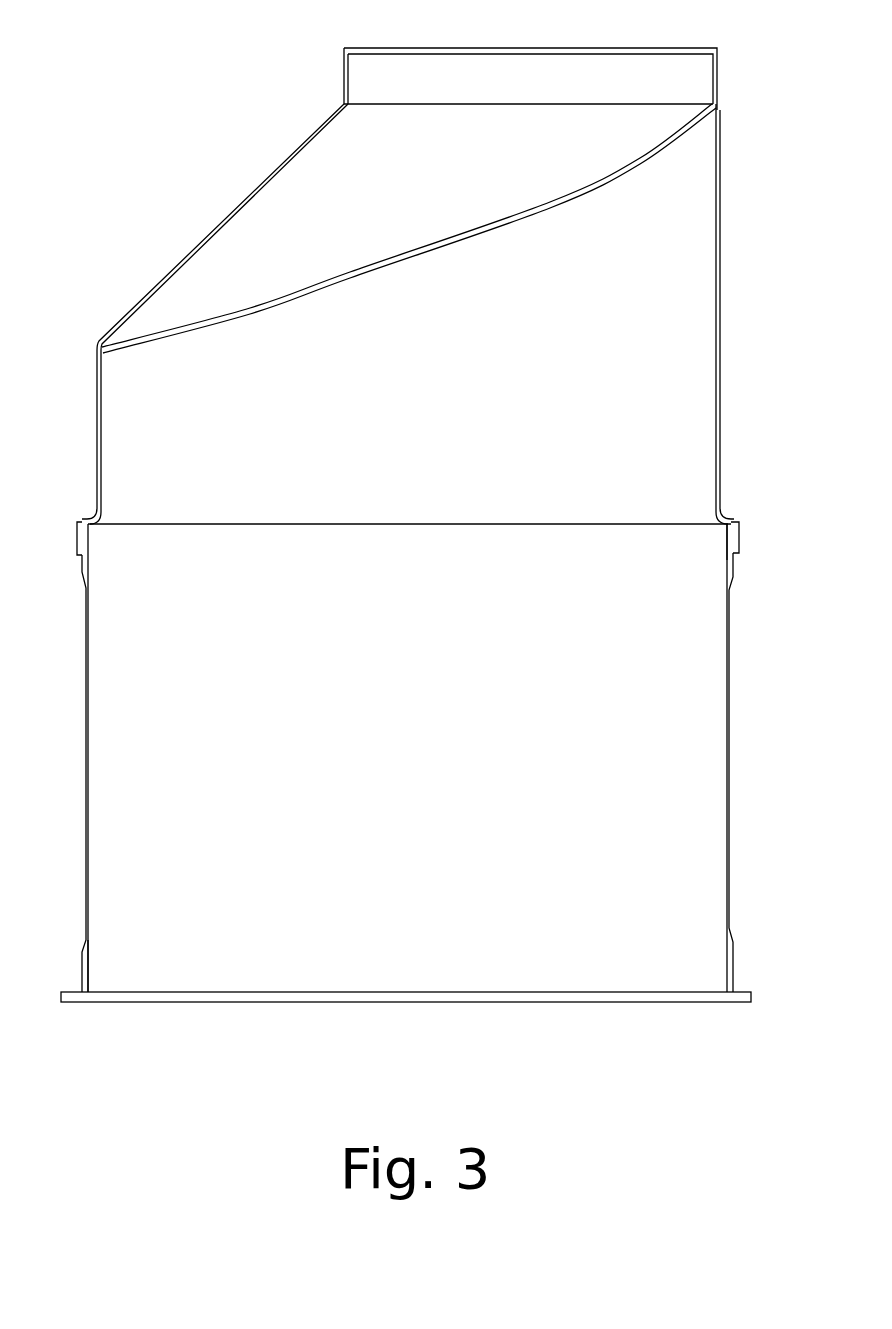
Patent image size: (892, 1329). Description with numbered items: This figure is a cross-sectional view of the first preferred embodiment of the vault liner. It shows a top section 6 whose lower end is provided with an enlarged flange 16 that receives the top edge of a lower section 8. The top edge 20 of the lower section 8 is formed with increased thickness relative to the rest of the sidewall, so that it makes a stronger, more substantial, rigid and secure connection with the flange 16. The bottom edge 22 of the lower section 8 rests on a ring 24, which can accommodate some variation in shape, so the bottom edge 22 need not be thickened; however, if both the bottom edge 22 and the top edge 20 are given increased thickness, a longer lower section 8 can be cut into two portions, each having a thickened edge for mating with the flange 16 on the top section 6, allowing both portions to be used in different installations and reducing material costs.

The top section 6 is at (720, 244).
The lower section 8 is at (732, 810).
The enlarged flange 16 is at (740, 535).
The top edge 20 is at (724, 541).
The bottom edge 22 is at (88, 965).
The ring 24 is at (387, 992).